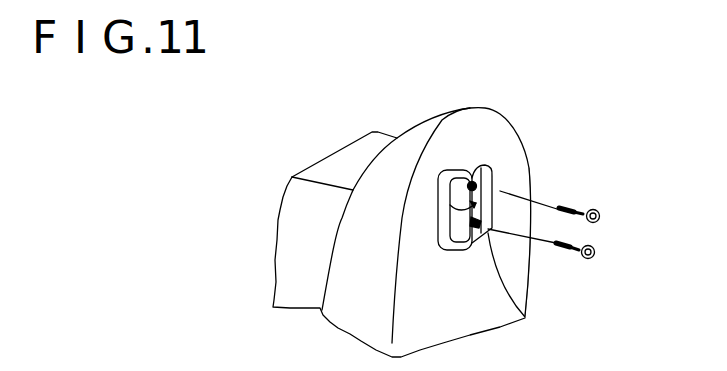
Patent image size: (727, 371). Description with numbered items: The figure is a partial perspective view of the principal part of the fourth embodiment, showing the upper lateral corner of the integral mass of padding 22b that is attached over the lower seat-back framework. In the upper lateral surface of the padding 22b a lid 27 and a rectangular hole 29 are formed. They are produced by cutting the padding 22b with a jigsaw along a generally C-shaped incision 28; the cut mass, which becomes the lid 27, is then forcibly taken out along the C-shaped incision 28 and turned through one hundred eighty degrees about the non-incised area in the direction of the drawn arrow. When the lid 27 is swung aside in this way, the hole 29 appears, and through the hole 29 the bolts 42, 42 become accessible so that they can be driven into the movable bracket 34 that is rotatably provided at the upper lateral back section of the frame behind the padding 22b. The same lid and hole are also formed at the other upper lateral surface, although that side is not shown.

The padding 22b is at (340, 163).
The lid 27 is at (458, 185).
The C-shaped incision 28 is at (478, 172).
The movable bracket 34 is at (488, 185).
The rectangular hole 29 is at (493, 233).
The bolt 42 is at (596, 212).